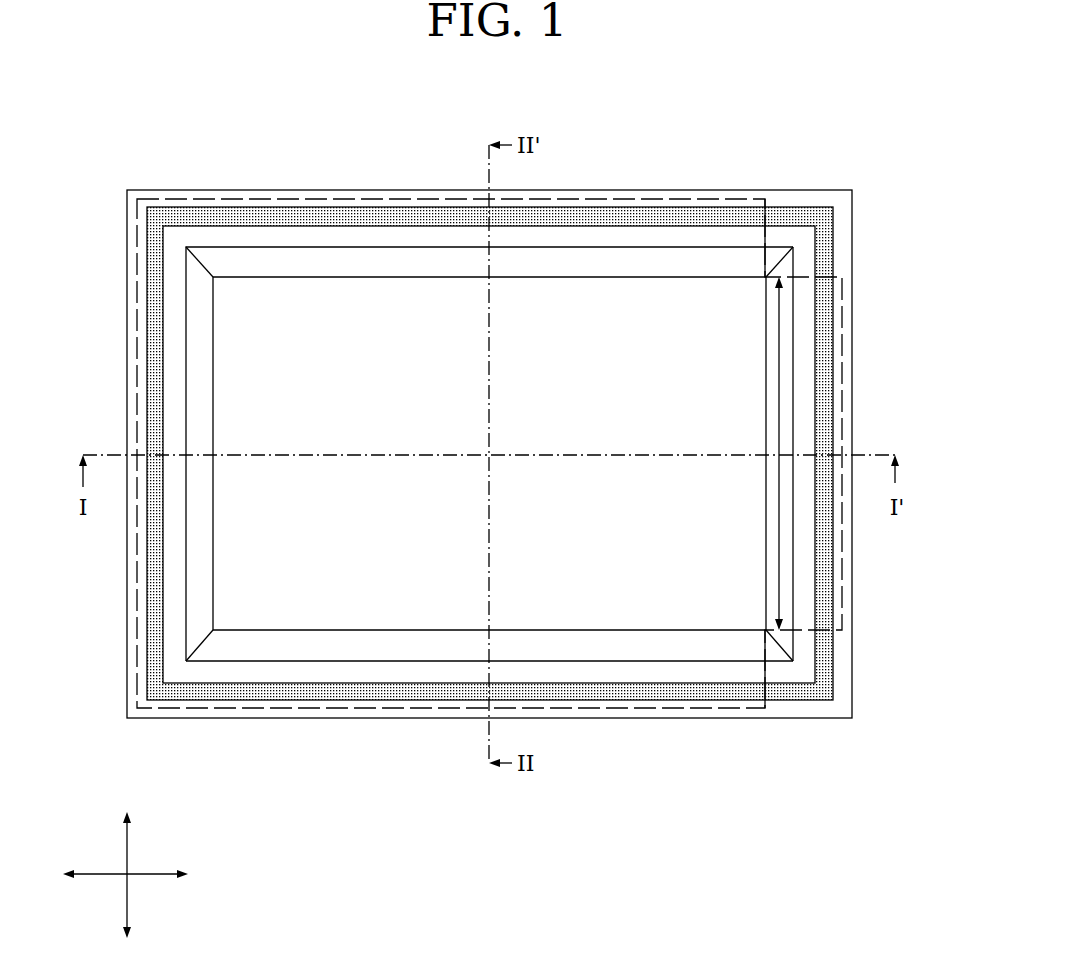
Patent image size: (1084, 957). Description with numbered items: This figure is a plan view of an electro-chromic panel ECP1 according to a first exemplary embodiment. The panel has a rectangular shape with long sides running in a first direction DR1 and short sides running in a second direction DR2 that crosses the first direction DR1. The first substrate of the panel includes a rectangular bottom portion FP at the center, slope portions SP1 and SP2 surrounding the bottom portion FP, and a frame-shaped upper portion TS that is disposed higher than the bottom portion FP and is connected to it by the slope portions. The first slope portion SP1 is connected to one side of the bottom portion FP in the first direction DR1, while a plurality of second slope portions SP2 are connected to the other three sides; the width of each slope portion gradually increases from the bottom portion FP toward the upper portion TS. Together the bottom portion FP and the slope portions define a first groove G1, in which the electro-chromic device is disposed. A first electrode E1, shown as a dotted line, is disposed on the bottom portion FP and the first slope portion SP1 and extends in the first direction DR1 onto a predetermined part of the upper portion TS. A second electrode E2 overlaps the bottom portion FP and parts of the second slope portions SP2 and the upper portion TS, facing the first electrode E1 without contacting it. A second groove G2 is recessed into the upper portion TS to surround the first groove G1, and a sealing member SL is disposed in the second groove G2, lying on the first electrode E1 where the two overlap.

The first electrode E1 is at (845, 318).
The second electrode E2 is at (670, 199).
The electro-chromic panel ECP1 is at (805, 190).
The sealing member SL is at (823, 690).
The first groove G1 is at (605, 292).
The second groove G2 is at (826, 540).
The first slope portion SP1 is at (787, 368).
The second slope portion SP2 is at (301, 262).
The bottom portion FP is at (607, 610).
The upper portion TS is at (790, 672).
The first direction DR1 is at (147, 875).
The second direction DR2 is at (127, 861).